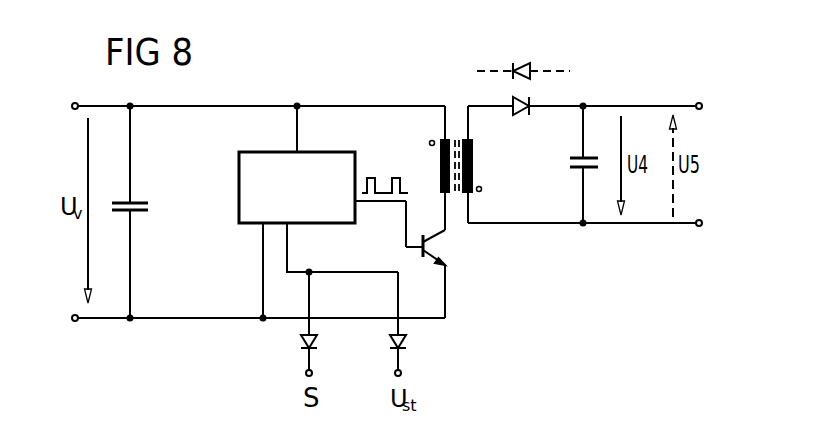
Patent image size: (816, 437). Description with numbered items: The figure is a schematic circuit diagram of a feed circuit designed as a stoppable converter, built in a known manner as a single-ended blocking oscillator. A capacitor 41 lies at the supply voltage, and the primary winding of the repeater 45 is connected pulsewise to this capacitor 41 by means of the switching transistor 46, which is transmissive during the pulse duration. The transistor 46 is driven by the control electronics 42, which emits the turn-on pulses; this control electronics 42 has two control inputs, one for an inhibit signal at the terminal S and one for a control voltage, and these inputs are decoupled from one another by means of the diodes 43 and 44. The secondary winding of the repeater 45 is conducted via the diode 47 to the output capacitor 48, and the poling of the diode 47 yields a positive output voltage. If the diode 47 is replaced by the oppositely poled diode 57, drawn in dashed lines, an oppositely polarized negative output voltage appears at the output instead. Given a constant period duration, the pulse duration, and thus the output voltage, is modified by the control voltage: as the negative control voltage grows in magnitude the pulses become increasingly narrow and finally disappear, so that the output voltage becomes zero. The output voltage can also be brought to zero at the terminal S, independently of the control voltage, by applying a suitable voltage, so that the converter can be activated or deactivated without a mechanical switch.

The capacitor 41 is at (143, 212).
The control electronics 42 is at (331, 213).
The diode 43 is at (294, 324).
The diode 44 is at (412, 324).
The repeater 45 is at (465, 168).
The switching transistor 46 is at (445, 274).
The diode 47 is at (522, 122).
The output capacitor 48 is at (570, 164).
The diode 57 is at (523, 54).